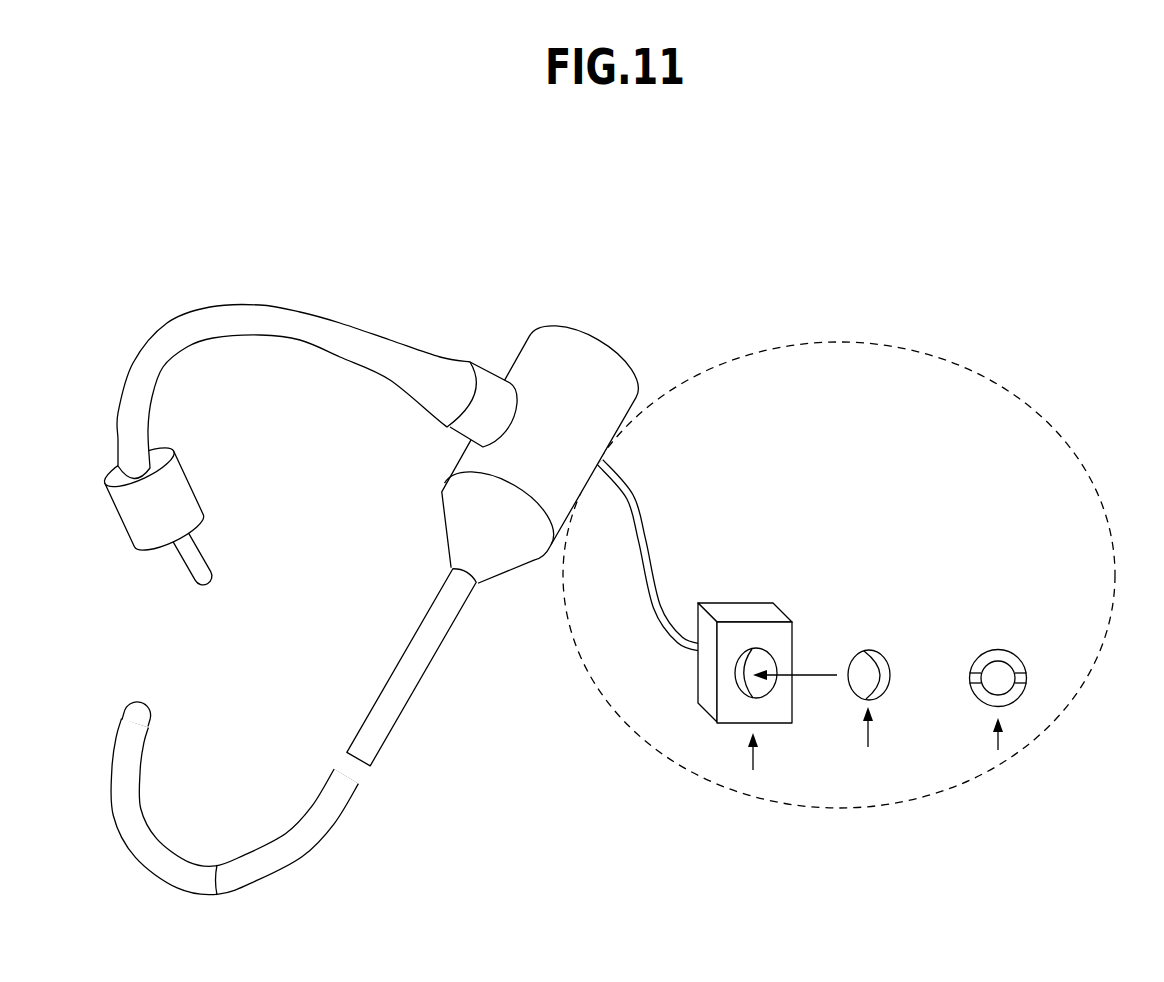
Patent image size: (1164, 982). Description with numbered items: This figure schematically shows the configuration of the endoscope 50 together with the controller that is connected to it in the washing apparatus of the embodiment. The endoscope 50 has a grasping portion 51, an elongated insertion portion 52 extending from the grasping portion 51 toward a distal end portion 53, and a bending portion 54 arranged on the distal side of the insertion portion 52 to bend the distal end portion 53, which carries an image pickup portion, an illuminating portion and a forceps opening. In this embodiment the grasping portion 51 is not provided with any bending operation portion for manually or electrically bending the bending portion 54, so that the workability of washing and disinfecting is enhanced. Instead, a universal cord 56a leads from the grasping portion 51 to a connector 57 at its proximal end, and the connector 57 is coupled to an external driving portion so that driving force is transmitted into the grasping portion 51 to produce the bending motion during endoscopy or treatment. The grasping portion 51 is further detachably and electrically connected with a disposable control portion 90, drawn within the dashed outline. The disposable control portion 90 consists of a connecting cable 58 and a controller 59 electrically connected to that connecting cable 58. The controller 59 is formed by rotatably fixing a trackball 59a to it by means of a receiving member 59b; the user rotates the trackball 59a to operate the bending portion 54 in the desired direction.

The endoscope 50 is at (376, 563).
The grasping portion 51 is at (566, 345).
The insertion portion 52 is at (341, 831).
The distal end portion 53 is at (138, 707).
The bending portion 54 is at (160, 732).
The universal cord 56a is at (293, 342).
The connector 57 is at (205, 556).
The connecting cable 58 is at (662, 481).
The controller 59 is at (750, 615).
The trackball 59a is at (867, 665).
The receiving member 59b is at (1002, 670).
The disposable control portion 90 is at (850, 342).